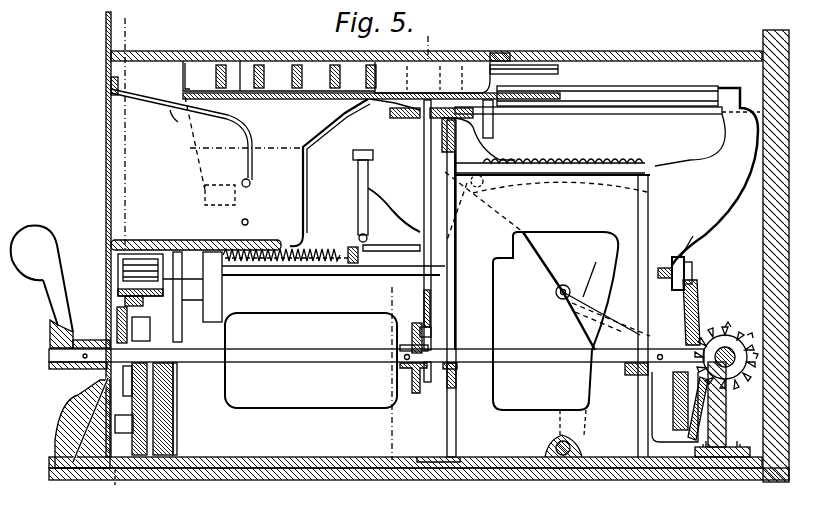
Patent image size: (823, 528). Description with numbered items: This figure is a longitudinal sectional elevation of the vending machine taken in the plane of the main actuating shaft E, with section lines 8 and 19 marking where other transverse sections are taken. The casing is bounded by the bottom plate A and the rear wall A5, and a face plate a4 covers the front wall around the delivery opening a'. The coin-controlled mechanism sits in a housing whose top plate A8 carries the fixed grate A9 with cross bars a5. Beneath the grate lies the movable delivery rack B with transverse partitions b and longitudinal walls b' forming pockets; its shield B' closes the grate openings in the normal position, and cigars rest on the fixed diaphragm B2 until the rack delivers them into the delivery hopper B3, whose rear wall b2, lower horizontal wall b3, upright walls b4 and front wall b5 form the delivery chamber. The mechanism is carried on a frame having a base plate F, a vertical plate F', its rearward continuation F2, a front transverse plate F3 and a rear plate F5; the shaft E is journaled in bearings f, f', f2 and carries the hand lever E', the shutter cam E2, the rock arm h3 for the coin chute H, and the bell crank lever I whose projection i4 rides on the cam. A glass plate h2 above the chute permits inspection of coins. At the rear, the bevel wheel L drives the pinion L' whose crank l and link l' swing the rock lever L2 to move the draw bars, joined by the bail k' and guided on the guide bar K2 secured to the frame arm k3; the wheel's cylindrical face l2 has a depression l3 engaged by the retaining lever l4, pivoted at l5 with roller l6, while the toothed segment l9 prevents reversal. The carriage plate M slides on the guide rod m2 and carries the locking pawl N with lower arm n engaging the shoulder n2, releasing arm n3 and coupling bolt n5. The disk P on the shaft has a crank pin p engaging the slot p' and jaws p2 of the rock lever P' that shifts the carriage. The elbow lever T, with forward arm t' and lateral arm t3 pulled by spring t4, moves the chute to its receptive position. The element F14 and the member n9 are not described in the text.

The section line 8 is at (116, 263).
The section line 19 is at (378, 458).
The delivery opening a' is at (83, 234).
The face plate a4 is at (110, 82).
The cross bars a5 is at (478, 40).
The bottom plate A is at (232, 472).
The rear wall A5 is at (770, 258).
The top plate of housing A8 is at (600, 53).
The fixed grate A9 is at (500, 55).
The transverse partitions b is at (203, 57).
The longitudinal walls of rack b' is at (268, 55).
The rear wall of hopper b2 is at (303, 170).
The lower horizontal wall b3 is at (198, 242).
The upright walls b4 is at (165, 121).
The front wall of hopper b5 is at (179, 125).
The movable delivery rack B is at (279, 57).
The shield B' is at (524, 44).
The fixed diaphragm B2 is at (371, 119).
The delivery hopper B3 is at (181, 139).
The main actuating shaft E is at (376, 360).
The hand lever E' is at (60, 286).
The shutter cam E2 is at (160, 402).
The bearing f is at (160, 381).
The bearing f' is at (458, 378).
The bearing f2 is at (630, 376).
The base plate of supporting frame F is at (405, 448).
The vertical plate F' is at (236, 292).
The rearward continuation of vertical plate F2 is at (555, 305).
The front transverse plate F3 is at (165, 432).
The rear transverse plate F5 is at (650, 240).
The frame standard F14 is at (465, 288).
The glass plate h2 is at (146, 243).
The rock arm h3 is at (118, 314).
The coin chute H is at (132, 278).
The projection i4 is at (135, 435).
The bell crank lever I is at (125, 398).
The bail k' is at (499, 123).
The arm of supporting frame k3 is at (706, 176).
The guide bar K2 is at (663, 113).
The crank l is at (611, 319).
The link l' is at (601, 298).
The cylindrical face l2 is at (676, 445).
The depression l3 is at (693, 276).
The retaining lever l4 is at (658, 283).
The pivot l5 is at (669, 267).
The projection or roller l6 is at (689, 238).
The toothed segment l9 is at (600, 158).
The bevel wheel L is at (700, 360).
The pinion L' is at (726, 378).
The rock lever L2 is at (560, 320).
The guide rod m2 is at (607, 96).
The carriage plate M is at (330, 172).
The lower arm of locking pawl n is at (397, 240).
The shoulder n2 is at (372, 265).
The right hand releasing arm n3 is at (395, 103).
The right hand coupling bolt n5 is at (358, 232).
The arm n9 is at (420, 118).
The locking pawl N is at (333, 225).
The crank pin p is at (396, 336).
The slot p' is at (448, 328).
The jaws p2 is at (426, 385).
The disk P is at (399, 378).
The rock lever P' is at (453, 284).
The forwardly projecting arm t' is at (183, 297).
The lateral arm t3 is at (226, 242).
The spring t4 is at (306, 245).
The elbow lever T is at (222, 272).